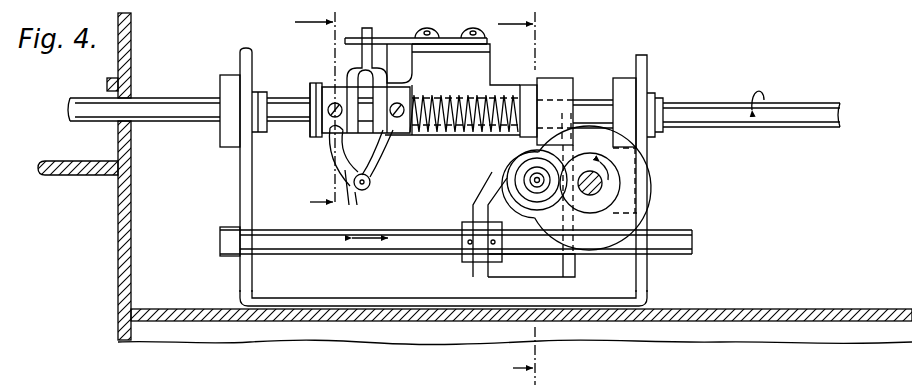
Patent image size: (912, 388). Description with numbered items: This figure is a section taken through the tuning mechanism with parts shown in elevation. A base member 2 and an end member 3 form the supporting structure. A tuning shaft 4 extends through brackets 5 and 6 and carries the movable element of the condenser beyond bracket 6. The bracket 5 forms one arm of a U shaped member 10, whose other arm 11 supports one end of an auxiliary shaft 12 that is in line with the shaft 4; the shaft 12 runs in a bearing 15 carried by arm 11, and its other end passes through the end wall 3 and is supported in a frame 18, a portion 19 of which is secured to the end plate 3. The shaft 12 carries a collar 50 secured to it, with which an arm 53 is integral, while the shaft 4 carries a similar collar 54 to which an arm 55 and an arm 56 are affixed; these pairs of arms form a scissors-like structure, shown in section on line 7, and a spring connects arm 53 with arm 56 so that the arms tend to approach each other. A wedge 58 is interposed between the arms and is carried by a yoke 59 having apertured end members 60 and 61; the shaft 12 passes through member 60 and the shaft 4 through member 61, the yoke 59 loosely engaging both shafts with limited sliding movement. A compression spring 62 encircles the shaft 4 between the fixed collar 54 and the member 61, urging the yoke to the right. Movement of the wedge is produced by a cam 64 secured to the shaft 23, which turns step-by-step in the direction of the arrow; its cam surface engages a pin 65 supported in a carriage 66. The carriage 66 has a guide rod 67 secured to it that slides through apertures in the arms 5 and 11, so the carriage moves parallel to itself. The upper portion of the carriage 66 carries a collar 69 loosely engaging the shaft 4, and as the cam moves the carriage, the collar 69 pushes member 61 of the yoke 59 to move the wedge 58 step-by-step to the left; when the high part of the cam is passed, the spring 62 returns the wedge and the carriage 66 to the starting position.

The base member 2 is at (205, 312).
The end member 3 is at (120, 227).
The tuning shaft 4 is at (797, 105).
The bracket 5 is at (648, 70).
The bracket 6 is at (523, 198).
The section line 7 is at (306, 112).
The U shaped member 10 is at (400, 304).
The arm 11 is at (243, 55).
The auxiliary shaft 12 is at (167, 97).
The bearing 15 is at (228, 138).
The frame 18 is at (52, 177).
The portion 19 is at (108, 133).
The shaft 23 is at (602, 183).
The collar 50 is at (325, 128).
The arm 53 is at (358, 197).
The collar 54 is at (408, 91).
The arm 55 is at (381, 58).
The arm 56 is at (386, 160).
The wedge 58 is at (405, 40).
The yoke 59 is at (478, 80).
The end member 60 is at (310, 86).
The end member 61 is at (537, 81).
The compression spring 62 is at (457, 129).
The cam 64 is at (622, 227).
The pin 65 is at (535, 180).
The carriage 66 is at (508, 265).
The guide rod 67 is at (335, 246).
The collar 69 is at (573, 80).